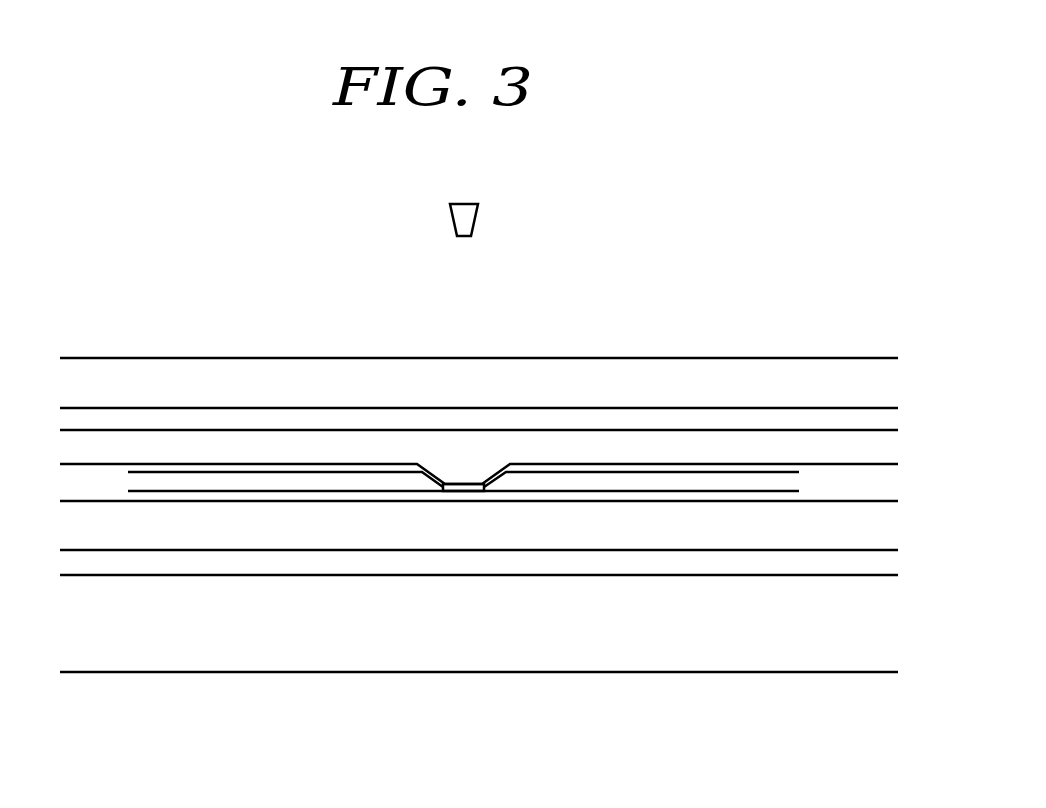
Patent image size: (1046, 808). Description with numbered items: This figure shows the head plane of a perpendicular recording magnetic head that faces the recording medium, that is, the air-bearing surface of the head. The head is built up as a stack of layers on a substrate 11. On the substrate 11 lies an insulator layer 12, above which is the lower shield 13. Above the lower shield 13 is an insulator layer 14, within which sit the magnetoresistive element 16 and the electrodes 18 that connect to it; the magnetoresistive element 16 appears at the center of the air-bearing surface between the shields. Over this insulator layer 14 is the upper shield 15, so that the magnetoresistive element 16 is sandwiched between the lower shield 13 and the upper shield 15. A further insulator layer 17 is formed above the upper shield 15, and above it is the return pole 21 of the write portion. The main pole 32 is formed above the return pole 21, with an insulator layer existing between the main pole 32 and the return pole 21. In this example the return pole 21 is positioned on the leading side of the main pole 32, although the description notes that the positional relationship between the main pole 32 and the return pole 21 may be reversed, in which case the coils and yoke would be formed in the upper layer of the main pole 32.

The substrate 11 is at (843, 628).
The insulator layer 12 is at (843, 564).
The lower shield 13 is at (843, 531).
The insulator layer 14 is at (650, 469).
The upper shield 15 is at (843, 458).
The magnetoresistive element 16 is at (463, 490).
The insulator layer 17 is at (843, 424).
The electrodes 18 is at (158, 483).
The return pole 21 is at (843, 391).
The main pole 32 is at (452, 221).